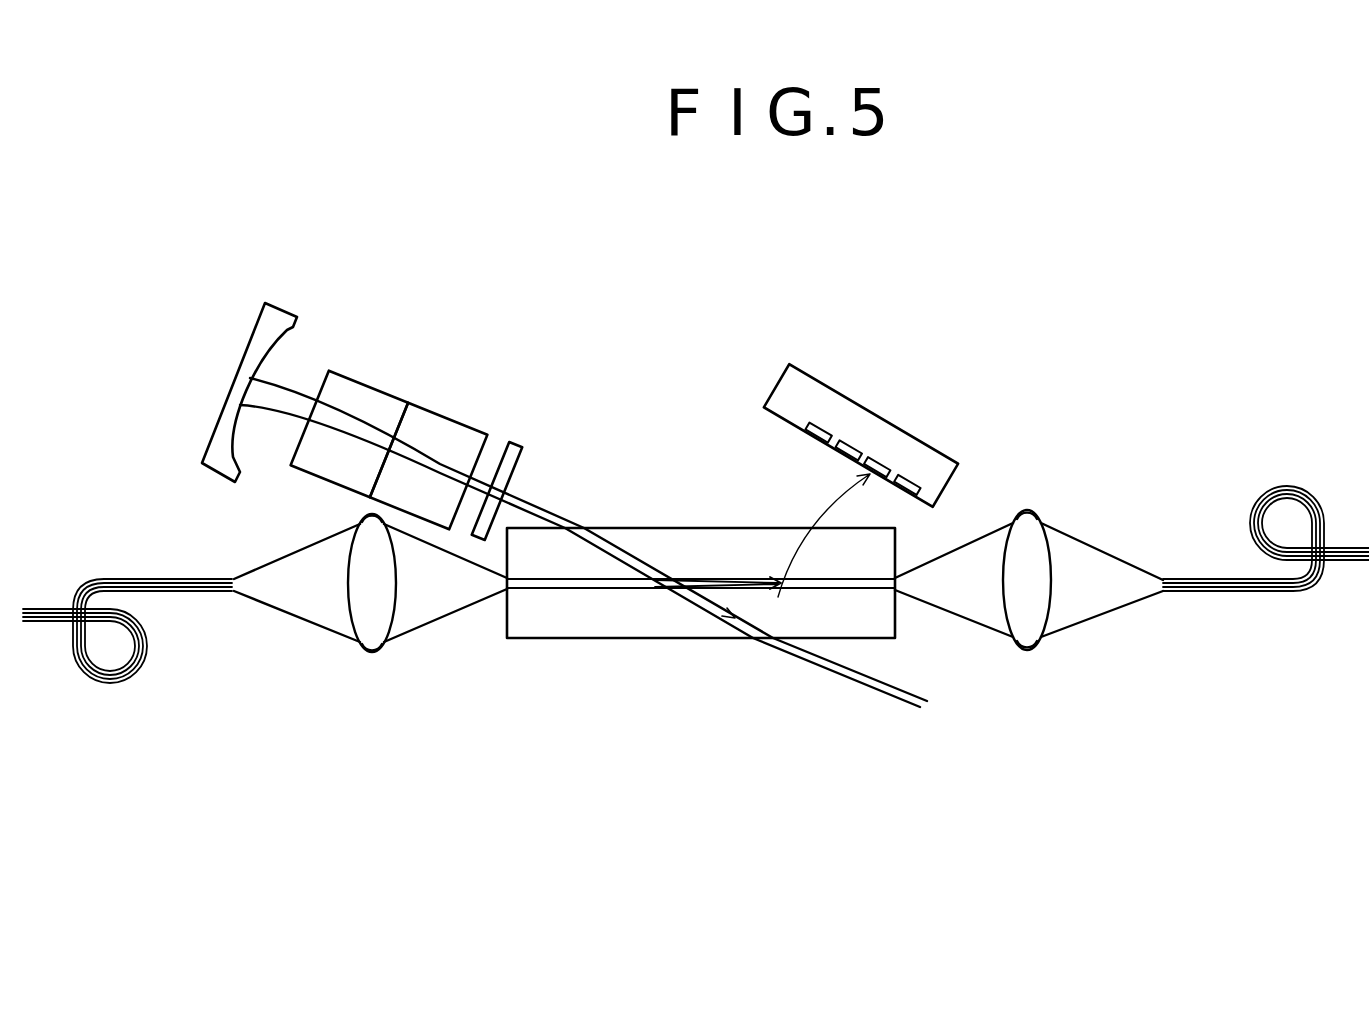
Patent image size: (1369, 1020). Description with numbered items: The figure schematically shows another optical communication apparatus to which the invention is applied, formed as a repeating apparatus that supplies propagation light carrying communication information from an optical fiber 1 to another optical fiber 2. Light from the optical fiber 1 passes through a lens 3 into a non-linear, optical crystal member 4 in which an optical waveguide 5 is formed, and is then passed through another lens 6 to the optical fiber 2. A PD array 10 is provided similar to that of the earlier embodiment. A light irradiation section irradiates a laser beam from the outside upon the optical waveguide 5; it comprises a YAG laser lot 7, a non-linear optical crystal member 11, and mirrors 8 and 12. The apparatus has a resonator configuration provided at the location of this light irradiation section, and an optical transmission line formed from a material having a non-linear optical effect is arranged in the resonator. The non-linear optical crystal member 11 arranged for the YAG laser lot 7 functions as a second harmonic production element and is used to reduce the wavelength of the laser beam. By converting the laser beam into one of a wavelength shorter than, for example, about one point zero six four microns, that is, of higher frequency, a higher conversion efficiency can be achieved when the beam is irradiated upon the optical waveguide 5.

The optical fiber 1 is at (110, 680).
The optical fiber 2 is at (1295, 593).
The lens 3 is at (373, 657).
The non-linear optical crystal member 4 is at (557, 622).
The optical waveguide 5 is at (620, 585).
The lens 6 is at (1028, 657).
The YAG laser lot 7 is at (367, 393).
The mirror 8 is at (282, 305).
The PD array 10 is at (872, 412).
The non-linear optical crystal member 11 is at (445, 420).
The mirror 12 is at (512, 440).